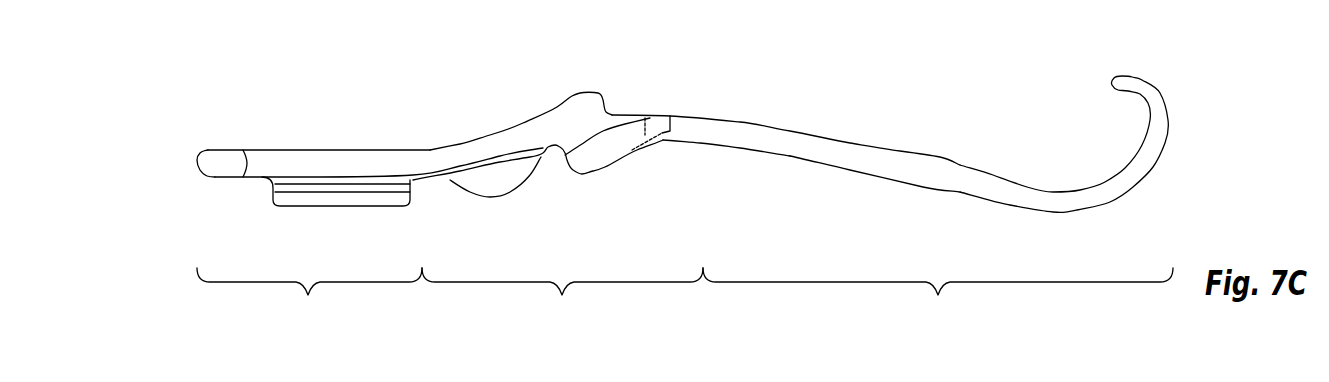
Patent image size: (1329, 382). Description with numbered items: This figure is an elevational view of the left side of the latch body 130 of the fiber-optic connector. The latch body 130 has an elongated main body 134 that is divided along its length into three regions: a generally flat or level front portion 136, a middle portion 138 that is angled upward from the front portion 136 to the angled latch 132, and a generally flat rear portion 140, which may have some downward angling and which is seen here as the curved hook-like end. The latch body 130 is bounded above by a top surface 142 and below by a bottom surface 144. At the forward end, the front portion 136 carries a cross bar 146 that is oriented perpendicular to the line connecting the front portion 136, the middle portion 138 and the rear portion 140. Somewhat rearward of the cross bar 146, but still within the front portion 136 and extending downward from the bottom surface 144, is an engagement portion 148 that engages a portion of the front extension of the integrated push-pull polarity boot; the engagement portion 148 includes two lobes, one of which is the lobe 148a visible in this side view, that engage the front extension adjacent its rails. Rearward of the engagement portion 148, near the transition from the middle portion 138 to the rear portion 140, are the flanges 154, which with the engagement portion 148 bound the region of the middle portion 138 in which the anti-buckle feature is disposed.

The latch body 130 is at (982, 86).
The angled latch 132 is at (595, 92).
The main body 134 is at (847, 170).
The front portion 136 is at (370, 235).
The middle portion 138 is at (558, 220).
The rear portion 140 is at (938, 199).
The top surface 142 is at (812, 132).
The bottom surface 144 is at (757, 155).
The cross bar 146 is at (225, 148).
The engagement portion 148 is at (367, 198).
The lobe 148a is at (283, 207).
The flanges 154 is at (603, 152).